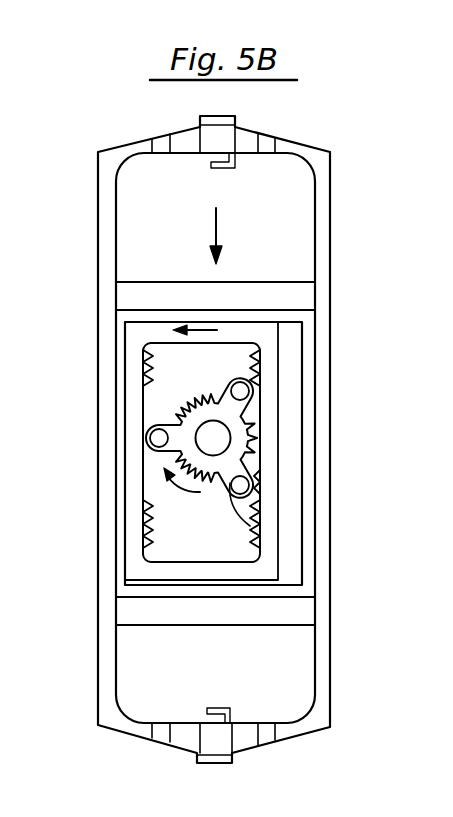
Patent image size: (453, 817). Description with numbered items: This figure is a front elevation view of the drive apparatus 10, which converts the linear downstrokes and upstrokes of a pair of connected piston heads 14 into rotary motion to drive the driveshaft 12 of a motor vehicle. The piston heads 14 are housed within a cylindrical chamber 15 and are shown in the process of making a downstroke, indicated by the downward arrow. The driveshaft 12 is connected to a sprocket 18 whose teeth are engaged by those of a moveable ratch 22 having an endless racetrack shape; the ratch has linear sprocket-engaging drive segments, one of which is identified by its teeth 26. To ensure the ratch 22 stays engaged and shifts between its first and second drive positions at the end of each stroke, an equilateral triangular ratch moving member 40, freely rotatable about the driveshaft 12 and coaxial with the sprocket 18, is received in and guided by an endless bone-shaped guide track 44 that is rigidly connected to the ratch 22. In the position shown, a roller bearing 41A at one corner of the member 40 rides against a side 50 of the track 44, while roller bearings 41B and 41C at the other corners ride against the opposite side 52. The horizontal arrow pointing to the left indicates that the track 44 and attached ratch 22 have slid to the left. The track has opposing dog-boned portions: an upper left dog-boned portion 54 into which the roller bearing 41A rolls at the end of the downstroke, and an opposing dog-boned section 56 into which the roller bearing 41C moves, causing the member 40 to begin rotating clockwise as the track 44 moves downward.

The drive apparatus 10 is at (82, 200).
The driveshaft 12 is at (218, 437).
The piston heads 14 is at (263, 300).
The cylindrical chamber 15 is at (323, 392).
The sprocket 18 is at (212, 482).
The ratch 22 is at (255, 553).
The teeth of second linear drive segment 26 is at (148, 383).
The ratch moving member 40 is at (238, 448).
The roller bearing 41A is at (150, 440).
The roller bearing 41B is at (250, 524).
The roller bearing 41C is at (250, 387).
The guide track 44 is at (262, 334).
The side of track 50 is at (157, 488).
The side of track 52 is at (258, 482).
The dog-boned portion 54 is at (160, 342).
The dog-boned section 56 is at (265, 346).